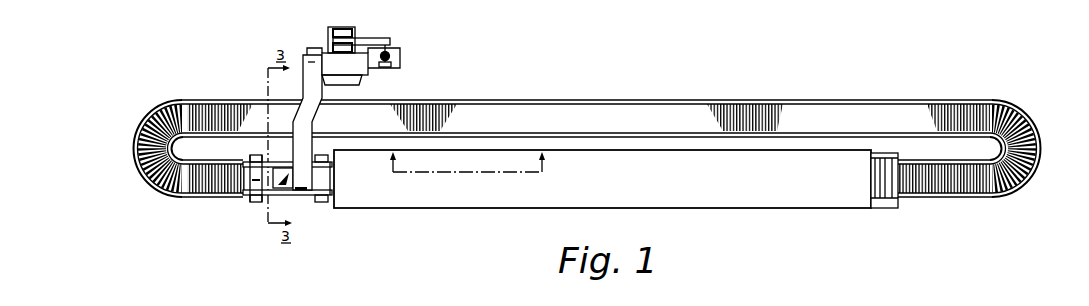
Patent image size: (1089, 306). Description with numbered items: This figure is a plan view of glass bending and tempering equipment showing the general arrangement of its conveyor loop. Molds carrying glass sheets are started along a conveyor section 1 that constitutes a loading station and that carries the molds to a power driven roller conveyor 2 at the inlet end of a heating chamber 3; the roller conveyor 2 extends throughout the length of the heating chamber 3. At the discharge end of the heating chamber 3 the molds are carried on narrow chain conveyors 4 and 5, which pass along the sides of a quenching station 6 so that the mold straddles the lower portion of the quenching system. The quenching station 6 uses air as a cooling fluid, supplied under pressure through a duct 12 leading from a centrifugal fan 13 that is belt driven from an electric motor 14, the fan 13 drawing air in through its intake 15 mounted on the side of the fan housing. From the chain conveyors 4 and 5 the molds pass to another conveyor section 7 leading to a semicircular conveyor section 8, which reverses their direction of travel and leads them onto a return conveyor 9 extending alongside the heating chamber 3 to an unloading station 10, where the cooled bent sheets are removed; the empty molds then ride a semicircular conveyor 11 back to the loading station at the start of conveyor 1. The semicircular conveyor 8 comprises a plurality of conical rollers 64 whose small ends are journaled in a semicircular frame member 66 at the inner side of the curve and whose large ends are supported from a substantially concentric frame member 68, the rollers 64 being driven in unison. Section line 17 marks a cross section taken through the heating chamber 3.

The conveyor section 1 is at (953, 183).
The power driven roller conveyor 2 is at (887, 203).
The heating chamber 3 is at (810, 183).
The chain conveyor 4 is at (308, 196).
The chain conveyor 5 is at (322, 169).
The quenching station 6 is at (272, 194).
The conveyor section 7 is at (207, 183).
The semicircular conveyor section 8 is at (143, 147).
The return conveyor 9 is at (487, 118).
The unloading station 10 is at (952, 110).
The semicircular conveyor 11 is at (1033, 155).
The duct 12 is at (305, 133).
The centrifugal fan 13 is at (356, 64).
The electric motor 14 is at (394, 63).
The intake 15 is at (341, 77).
The section line 17 is at (392, 167).
The conical rollers 64 is at (141, 161).
The semicircular frame member 66 is at (181, 148).
The frame member 68 is at (153, 182).